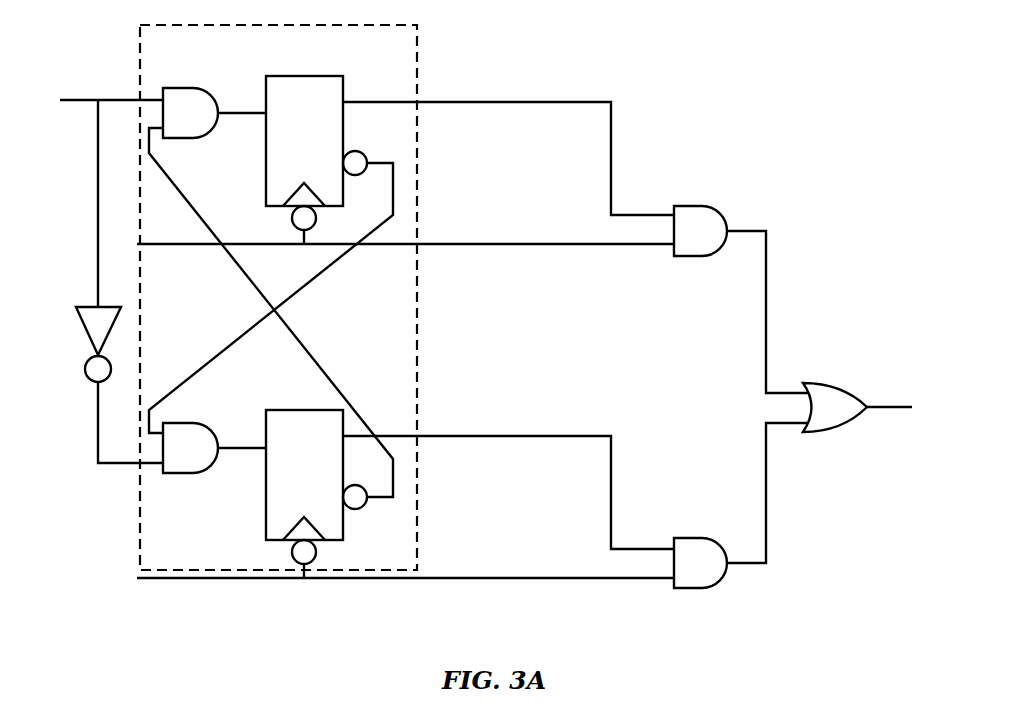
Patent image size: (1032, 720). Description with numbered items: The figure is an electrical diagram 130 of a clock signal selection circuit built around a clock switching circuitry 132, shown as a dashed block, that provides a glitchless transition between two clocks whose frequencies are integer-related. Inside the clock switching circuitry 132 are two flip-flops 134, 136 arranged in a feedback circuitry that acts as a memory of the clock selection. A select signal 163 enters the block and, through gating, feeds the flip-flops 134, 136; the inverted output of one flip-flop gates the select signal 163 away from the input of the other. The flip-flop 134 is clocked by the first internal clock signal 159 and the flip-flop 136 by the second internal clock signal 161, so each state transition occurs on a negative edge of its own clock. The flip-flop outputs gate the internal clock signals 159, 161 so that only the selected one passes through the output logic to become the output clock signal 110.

The output clock signal 110 is at (888, 407).
The electrical diagram 130 is at (688, 46).
The clock switching circuitry 132 is at (275, 25).
The flip-flop 134 is at (305, 410).
The flip-flop 136 is at (305, 76).
The internal clock signal 159 is at (158, 580).
The internal clock signal 161 is at (148, 246).
The select signal 163 is at (72, 100).